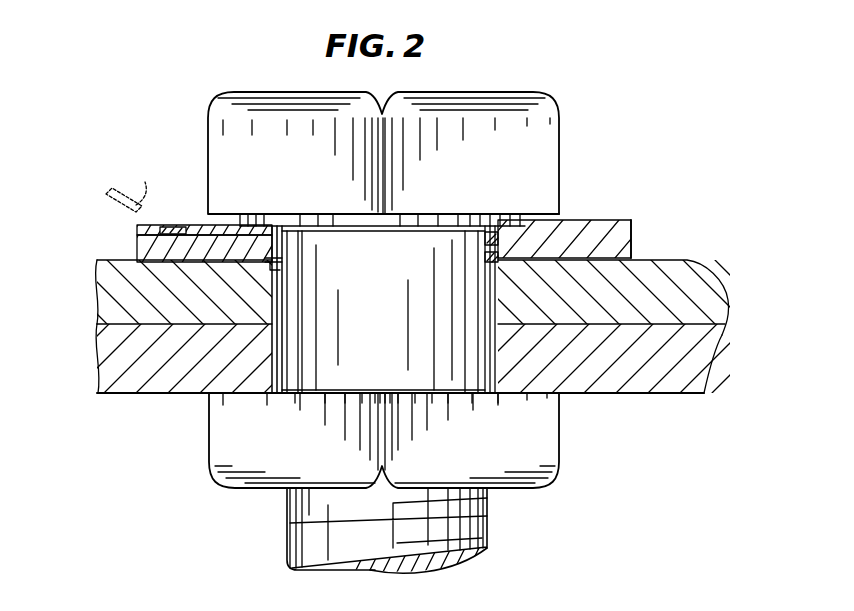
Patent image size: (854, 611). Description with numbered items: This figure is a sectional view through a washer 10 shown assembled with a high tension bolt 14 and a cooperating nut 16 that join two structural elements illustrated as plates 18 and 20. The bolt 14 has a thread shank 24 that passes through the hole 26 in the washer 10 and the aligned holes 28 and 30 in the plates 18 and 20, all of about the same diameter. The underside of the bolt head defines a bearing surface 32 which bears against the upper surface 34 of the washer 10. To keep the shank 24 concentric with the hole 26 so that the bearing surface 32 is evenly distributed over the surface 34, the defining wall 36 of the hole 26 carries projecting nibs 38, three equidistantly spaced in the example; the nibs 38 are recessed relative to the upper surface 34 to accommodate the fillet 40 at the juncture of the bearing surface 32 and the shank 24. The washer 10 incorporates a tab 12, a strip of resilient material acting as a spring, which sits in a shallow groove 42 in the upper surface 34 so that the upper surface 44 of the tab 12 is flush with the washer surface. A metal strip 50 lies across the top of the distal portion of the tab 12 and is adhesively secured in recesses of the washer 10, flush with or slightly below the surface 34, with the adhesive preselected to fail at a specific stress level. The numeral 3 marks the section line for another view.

The section line for FIG. 3 is at (104, 218).
The washer 10 is at (650, 238).
The tab 12 is at (130, 233).
The high tension bolt 14 is at (578, 137).
The nut 16 is at (550, 443).
The plate 18 is at (688, 276).
The plate 20 is at (686, 372).
The thread shank 24 is at (293, 521).
The hole 26 is at (277, 226).
The hole 28 is at (276, 294).
The hole 30 is at (272, 352).
The bearing surface 32 is at (560, 214).
The upper surface 34 is at (607, 221).
The defining wall 36 is at (490, 226).
The nibs 38 is at (482, 248).
The fillet 40 is at (485, 229).
The shallow groove 42 is at (185, 225).
The upper surface 44 is at (212, 225).
The metal strip 50 is at (126, 190).